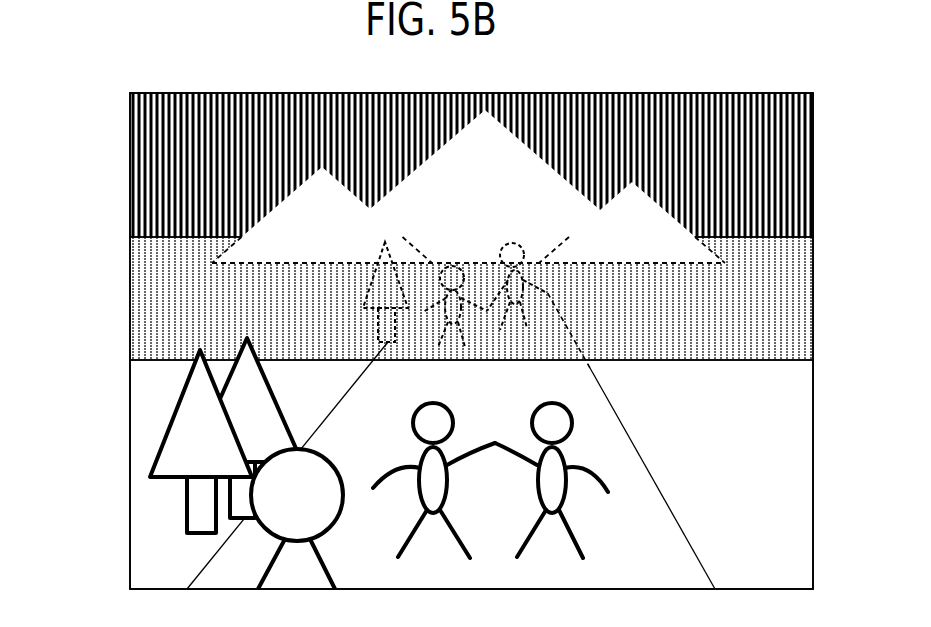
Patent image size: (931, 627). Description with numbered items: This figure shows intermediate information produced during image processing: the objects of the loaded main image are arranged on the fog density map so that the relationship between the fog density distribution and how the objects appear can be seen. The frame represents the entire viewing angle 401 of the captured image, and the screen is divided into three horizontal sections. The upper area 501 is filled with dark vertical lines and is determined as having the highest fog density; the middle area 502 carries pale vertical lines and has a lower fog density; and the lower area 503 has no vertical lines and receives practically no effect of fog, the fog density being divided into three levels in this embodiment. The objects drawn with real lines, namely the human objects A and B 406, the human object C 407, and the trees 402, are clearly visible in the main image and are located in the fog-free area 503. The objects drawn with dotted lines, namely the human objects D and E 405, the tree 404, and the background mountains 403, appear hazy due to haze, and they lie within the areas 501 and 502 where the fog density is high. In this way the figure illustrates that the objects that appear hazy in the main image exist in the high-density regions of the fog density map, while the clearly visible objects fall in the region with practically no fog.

The entire viewing angle 401 is at (683, 93).
The trees 402 is at (187, 383).
The background mountains 403 is at (268, 211).
The tree 404 is at (377, 324).
The human objects D and E 405 is at (552, 308).
The human objects A and B 406 is at (592, 507).
The human object C 407 is at (271, 560).
The area with dark vertical lines 501 is at (130, 172).
The area with pale vertical lines 502 is at (130, 303).
The area with no vertical line 503 is at (130, 482).